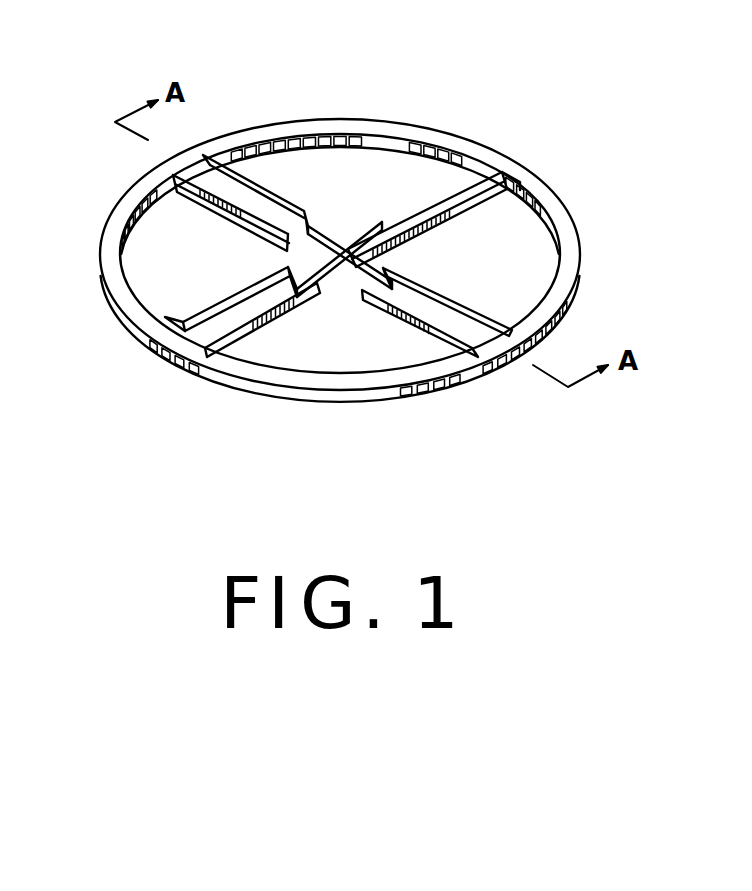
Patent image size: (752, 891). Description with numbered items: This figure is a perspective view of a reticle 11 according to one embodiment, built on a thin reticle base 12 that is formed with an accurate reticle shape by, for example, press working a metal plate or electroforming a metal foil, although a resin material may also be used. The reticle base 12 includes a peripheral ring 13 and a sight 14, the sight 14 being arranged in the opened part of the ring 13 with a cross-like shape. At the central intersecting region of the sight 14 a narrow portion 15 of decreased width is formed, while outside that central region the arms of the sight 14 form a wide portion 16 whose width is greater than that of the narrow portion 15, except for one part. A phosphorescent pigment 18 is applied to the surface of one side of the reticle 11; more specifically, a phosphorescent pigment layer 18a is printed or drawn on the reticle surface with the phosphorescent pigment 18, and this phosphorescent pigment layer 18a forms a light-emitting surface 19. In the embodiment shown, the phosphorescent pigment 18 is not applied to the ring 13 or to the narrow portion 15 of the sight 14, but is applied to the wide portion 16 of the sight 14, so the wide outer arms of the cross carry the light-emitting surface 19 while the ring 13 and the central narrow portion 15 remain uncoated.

The reticle 11 is at (337, 254).
The reticle base 12 is at (582, 252).
The peripheral ring 13 is at (563, 293).
The sight 14 is at (341, 258).
The narrow portion 15 is at (343, 257).
The wide portion 16 is at (243, 333).
The phosphorescent pigment 18 is at (404, 283).
The phosphorescent pigment layer 18a is at (233, 312).
The light-emitting surface 19 is at (177, 323).